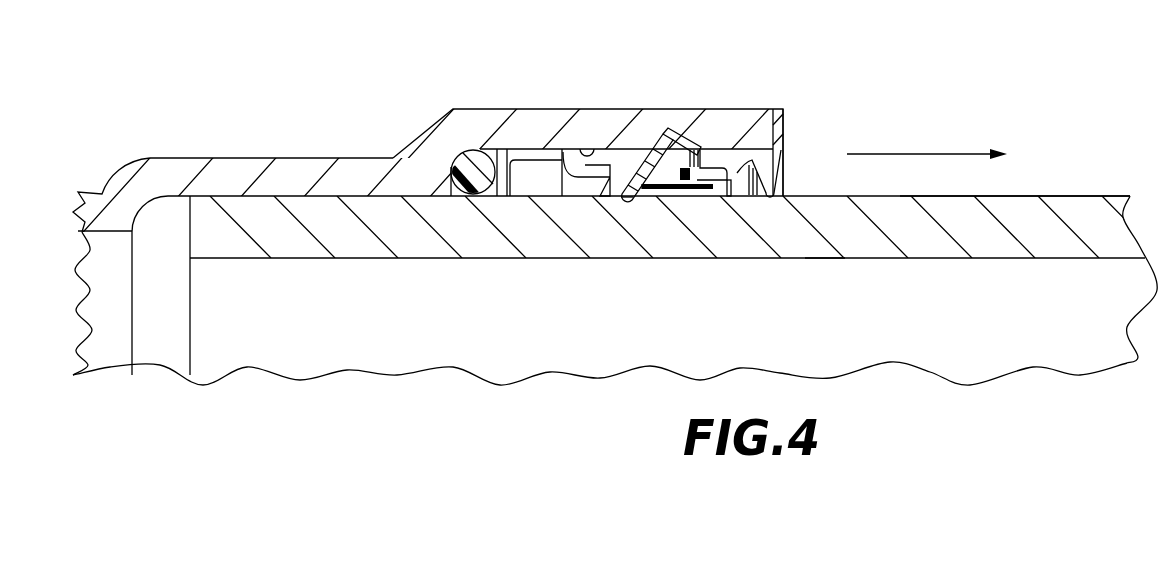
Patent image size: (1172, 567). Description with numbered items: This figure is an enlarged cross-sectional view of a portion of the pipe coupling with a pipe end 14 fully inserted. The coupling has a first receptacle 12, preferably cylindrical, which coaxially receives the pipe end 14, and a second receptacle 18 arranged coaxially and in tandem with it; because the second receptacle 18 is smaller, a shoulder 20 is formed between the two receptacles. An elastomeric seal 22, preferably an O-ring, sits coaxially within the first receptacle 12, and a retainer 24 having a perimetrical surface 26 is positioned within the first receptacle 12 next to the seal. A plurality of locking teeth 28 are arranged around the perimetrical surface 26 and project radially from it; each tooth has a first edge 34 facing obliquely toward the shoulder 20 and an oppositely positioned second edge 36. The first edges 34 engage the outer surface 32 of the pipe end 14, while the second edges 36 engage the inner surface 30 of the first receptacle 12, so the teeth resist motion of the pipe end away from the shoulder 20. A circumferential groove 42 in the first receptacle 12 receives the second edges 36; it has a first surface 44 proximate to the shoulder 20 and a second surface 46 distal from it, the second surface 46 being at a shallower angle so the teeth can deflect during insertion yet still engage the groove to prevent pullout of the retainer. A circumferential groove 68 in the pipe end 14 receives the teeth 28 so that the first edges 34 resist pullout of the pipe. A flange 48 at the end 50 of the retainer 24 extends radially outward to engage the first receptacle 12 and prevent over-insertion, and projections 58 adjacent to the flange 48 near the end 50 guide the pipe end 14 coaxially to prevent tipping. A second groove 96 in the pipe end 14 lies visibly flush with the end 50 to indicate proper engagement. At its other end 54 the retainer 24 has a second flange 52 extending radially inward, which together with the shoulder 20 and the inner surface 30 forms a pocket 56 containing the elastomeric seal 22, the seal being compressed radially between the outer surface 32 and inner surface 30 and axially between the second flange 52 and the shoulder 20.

The first receptacle 12 is at (486, 109).
The pipe end 14 is at (1097, 207).
The second receptacle 18 is at (203, 158).
The shoulder 20 is at (448, 188).
The elastomeric seal 22 is at (458, 158).
The retainer 24 is at (787, 120).
The perimetrical surface 26 is at (727, 197).
The locking teeth 28 is at (613, 178).
The inner surface 30 is at (596, 157).
The outer surface 32 is at (1010, 196).
The first edge 34 is at (624, 197).
The second edge 36 is at (690, 185).
The circumferential groove 42 is at (666, 127).
The first surface 44 is at (655, 128).
The second surface 46 is at (698, 165).
The flange 48 is at (787, 118).
The end 50 is at (786, 190).
The second flange 52 is at (558, 197).
The other end 54 is at (525, 187).
The pocket 56 is at (478, 197).
The projections 58 is at (790, 142).
The circumferential groove 68 is at (650, 200).
The second groove 96 is at (823, 258).